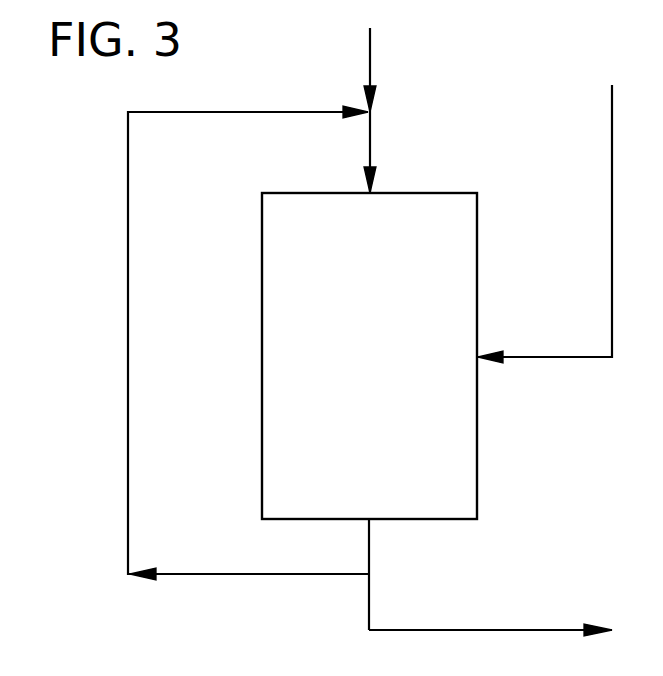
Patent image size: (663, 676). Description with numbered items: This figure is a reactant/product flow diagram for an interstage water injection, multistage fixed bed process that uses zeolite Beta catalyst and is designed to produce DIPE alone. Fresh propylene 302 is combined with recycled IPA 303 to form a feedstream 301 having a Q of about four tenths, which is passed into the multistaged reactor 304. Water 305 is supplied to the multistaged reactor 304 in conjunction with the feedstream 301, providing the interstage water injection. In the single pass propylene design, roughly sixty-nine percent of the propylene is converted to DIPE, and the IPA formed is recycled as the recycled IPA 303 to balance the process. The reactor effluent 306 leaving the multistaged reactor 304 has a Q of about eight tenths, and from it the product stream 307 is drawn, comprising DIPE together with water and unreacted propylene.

The feedstream 301 is at (371, 145).
The propylene 302 is at (371, 60).
The recycled IPA 303 is at (245, 113).
The multistaged reactor 304 is at (478, 258).
The water 305 is at (550, 358).
The reactor effluent 306 is at (371, 548).
The product stream 307 is at (522, 630).